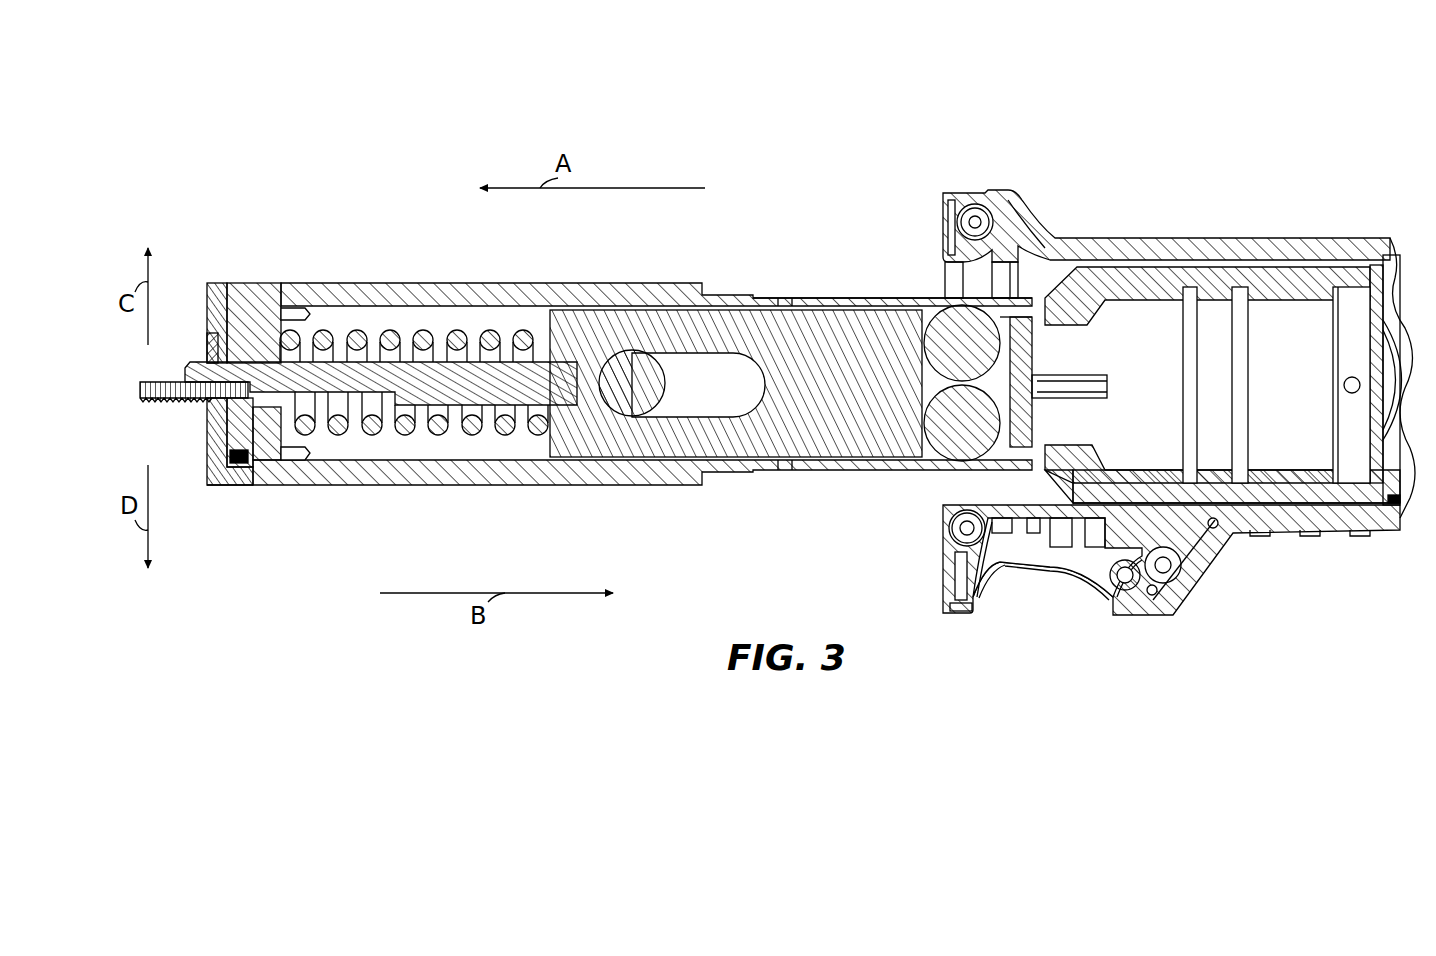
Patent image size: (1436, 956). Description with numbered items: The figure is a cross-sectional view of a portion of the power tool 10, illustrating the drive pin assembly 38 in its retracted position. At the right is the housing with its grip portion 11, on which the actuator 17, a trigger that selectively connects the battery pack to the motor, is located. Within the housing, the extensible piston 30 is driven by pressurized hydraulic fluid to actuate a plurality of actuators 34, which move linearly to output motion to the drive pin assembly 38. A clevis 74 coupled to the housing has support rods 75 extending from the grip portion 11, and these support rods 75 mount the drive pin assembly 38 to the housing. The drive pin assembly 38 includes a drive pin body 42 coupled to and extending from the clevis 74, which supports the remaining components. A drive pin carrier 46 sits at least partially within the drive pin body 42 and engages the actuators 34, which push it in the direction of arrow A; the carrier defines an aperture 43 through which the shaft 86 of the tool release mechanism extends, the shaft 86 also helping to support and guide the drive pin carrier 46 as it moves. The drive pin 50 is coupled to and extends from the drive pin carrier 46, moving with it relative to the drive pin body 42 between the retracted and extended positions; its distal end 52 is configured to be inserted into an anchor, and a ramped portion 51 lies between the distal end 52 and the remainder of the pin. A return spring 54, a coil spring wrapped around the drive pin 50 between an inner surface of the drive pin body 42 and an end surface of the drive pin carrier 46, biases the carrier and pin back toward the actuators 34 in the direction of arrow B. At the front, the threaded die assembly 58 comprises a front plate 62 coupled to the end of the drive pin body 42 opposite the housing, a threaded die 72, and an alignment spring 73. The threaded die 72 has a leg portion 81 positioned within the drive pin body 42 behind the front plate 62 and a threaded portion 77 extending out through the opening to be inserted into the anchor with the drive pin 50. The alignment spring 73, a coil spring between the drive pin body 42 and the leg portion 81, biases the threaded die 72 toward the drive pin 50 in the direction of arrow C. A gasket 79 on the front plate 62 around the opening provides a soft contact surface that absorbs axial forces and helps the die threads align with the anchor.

The power tool 10 is at (993, 123).
The grip portion 11 is at (1240, 237).
The actuator 17 is at (1060, 572).
The piston 30 is at (1010, 318).
The actuators 34 is at (965, 325).
The drive pin assembly 38 is at (405, 181).
The drive pin body 42 is at (512, 282).
The aperture 43 is at (680, 395).
The drive pin carrier 46 is at (736, 386).
The drive pin 50 is at (455, 385).
The ramped portion 51 is at (262, 350).
The distal end 52 is at (207, 345).
The return spring 54 is at (372, 420).
The threaded die assembly 58 is at (186, 444).
The front plate 62 is at (215, 485).
The threaded die 72 is at (165, 384).
The alignment spring 73 is at (238, 468).
The clevis 74 is at (1160, 478).
The support rods 75 is at (880, 298).
The threaded portion 77 is at (178, 400).
The gasket 79 is at (205, 340).
The leg portion 81 is at (283, 455).
The shaft 86 is at (648, 378).